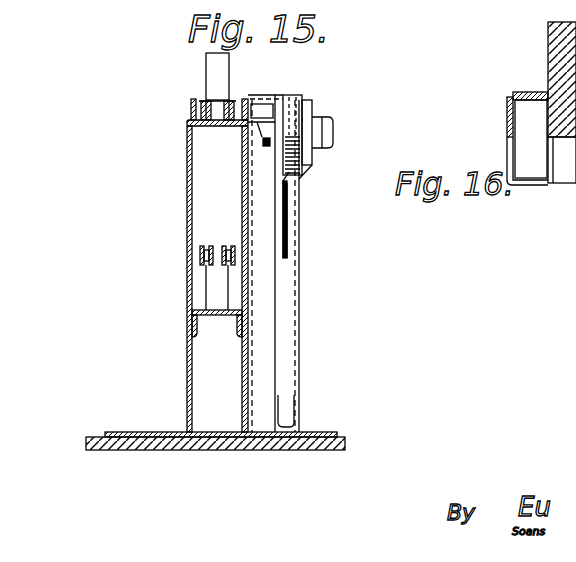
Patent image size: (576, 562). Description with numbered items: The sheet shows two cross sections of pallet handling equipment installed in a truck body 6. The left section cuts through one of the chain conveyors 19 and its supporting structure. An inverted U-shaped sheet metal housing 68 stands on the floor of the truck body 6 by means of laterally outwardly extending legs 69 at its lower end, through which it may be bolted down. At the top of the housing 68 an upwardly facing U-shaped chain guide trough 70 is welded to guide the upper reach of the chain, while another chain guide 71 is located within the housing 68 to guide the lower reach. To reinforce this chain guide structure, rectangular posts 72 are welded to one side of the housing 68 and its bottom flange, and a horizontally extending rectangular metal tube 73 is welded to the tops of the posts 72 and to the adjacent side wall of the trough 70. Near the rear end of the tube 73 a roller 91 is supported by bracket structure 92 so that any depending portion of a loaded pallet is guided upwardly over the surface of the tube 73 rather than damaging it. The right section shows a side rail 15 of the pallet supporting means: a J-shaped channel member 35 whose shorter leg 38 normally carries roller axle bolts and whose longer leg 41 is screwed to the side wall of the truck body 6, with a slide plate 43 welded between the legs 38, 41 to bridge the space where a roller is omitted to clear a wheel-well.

In FIG. 15, the conveyor 19 is at (213, 97).
In FIG. 15, the chain guide trough 70 is at (190, 112).
In FIG. 15, the housing 68 is at (187, 184).
In FIG. 15, the rectangular metal tube 73 is at (262, 128).
In FIG. 15, the chain guide 71 is at (187, 293).
In FIG. 15, the rectangular posts 72 is at (267, 298).
In FIG. 15, the roller 91 is at (300, 95).
In FIG. 15, the bracket structure 92 is at (300, 181).
In FIG. 15, the legs 69 is at (135, 432).
In FIG. 16, the longer leg 41 is at (548, 50).
In FIG. 16, the slide plate 43 is at (530, 92).
In FIG. 16, the leg 38 is at (507, 108).
In FIG. 16, the side rail 15 is at (507, 130).
In FIG. 16, the J-shaped channel member 35 is at (518, 187).
In FIG. 16, the truck body 6 is at (566, 186).